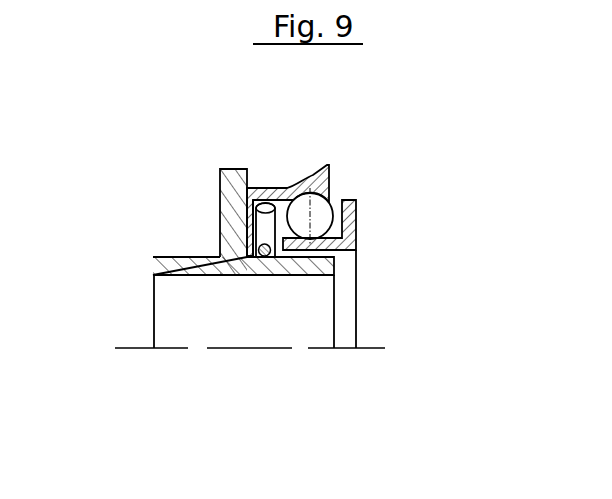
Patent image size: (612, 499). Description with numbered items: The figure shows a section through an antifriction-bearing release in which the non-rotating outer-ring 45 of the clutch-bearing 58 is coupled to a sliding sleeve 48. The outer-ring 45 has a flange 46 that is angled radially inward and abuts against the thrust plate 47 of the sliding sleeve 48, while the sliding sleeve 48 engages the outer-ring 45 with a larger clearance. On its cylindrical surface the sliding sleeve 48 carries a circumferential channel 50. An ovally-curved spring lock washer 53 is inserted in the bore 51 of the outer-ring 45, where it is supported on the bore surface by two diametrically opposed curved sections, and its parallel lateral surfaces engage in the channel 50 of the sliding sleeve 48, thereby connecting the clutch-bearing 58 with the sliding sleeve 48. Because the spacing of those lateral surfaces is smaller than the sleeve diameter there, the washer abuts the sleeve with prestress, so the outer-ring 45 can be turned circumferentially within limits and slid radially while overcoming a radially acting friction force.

The outer-ring 45 is at (310, 178).
The flange 46 is at (255, 228).
The thrust plate 47 is at (230, 192).
The sliding sleeve 48 is at (197, 279).
The circumferential channel 50 is at (290, 265).
The bore 51 is at (287, 215).
The spring lock washer 53 is at (268, 228).
The clutch-bearing 58 is at (371, 204).